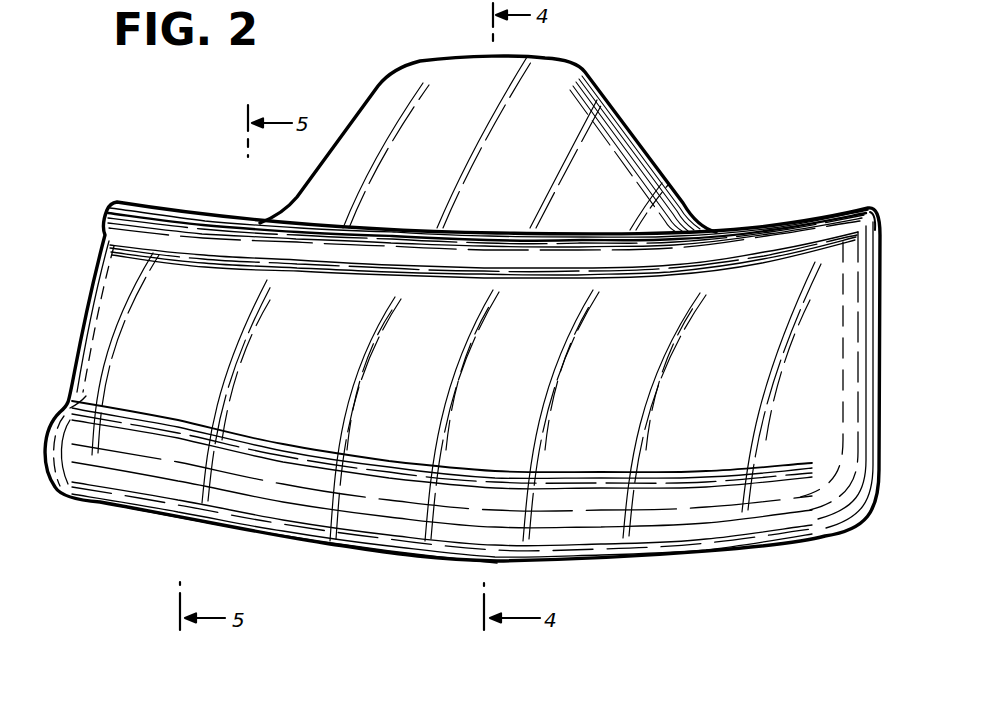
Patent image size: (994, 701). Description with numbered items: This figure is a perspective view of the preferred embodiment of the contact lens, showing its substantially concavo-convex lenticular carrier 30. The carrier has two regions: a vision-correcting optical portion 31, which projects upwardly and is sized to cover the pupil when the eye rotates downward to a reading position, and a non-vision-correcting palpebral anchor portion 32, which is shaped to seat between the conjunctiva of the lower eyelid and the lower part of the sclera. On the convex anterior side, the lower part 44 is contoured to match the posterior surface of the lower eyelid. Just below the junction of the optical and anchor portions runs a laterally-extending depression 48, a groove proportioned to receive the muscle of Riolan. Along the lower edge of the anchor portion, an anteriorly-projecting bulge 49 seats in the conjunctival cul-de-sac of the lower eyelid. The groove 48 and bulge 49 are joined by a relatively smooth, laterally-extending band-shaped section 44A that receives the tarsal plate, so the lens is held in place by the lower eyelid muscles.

The lenticular carrier 30 is at (803, 541).
The optical portion 31 is at (604, 129).
The palpebral anchor portion 32 is at (668, 560).
The lower part of anterior convex surface 44 is at (853, 343).
The band-shaped section 44A is at (83, 318).
The laterally-extending depression 48 is at (107, 223).
The anteriorly-projecting bulge 49 is at (44, 477).